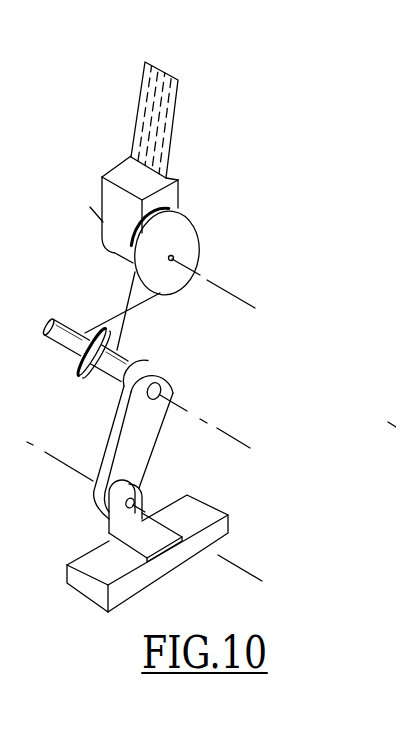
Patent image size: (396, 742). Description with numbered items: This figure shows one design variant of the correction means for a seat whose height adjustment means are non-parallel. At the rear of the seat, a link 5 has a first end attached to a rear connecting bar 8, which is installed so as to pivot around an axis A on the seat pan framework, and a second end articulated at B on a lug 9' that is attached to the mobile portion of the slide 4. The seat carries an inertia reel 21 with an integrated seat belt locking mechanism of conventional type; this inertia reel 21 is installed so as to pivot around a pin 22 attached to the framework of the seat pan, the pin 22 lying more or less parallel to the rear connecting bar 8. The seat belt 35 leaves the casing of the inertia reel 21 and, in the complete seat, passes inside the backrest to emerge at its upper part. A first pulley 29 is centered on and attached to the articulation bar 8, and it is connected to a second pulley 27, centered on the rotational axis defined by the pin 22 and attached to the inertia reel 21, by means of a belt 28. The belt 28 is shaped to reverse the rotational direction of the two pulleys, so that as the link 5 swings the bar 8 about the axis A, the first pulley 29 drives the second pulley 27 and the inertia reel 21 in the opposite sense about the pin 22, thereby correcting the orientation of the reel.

The seat belt 35 is at (168, 111).
The inertia reel 21 is at (167, 193).
The second pulley 27 is at (172, 272).
The pin 22 is at (237, 297).
The belt 28 is at (130, 293).
The rear connecting bar 8 is at (48, 340).
The first pulley 29 is at (92, 373).
The link 5 is at (172, 382).
The axis A is at (225, 433).
The lug 9' is at (152, 506).
The articulation point B is at (262, 580).
The mobile portion of the slide 4 is at (85, 587).